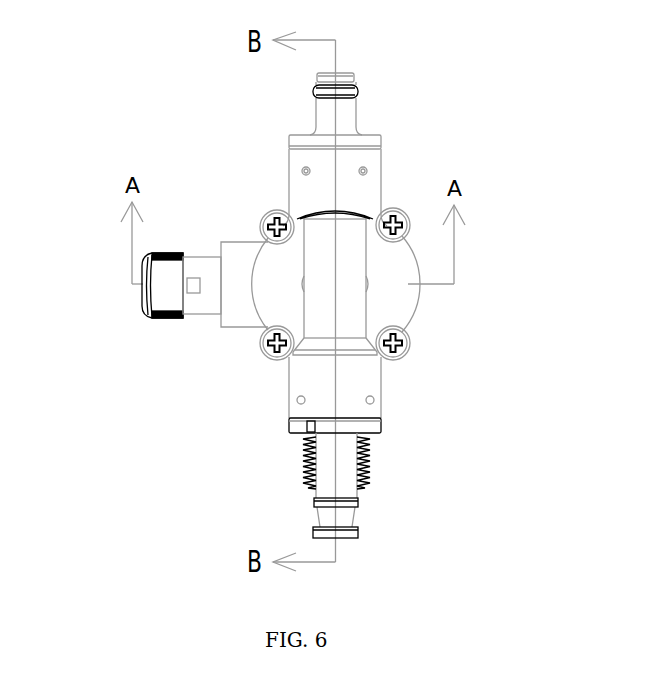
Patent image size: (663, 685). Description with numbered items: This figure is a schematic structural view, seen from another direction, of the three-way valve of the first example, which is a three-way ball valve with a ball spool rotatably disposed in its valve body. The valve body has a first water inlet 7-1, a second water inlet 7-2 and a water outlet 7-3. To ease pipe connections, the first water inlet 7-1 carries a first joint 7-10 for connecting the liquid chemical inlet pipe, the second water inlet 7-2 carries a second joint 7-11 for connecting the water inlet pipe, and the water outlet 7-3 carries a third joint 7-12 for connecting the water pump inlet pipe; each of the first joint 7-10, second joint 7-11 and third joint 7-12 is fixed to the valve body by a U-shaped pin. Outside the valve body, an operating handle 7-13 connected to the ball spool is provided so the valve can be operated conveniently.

The first water inlet 7-1 is at (276, 432).
The second water inlet 7-2 is at (390, 394).
The water outlet 7-3 is at (386, 174).
The first joint 7-10 is at (379, 466).
The second joint 7-11 is at (316, 476).
The third joint 7-12 is at (358, 98).
The operating handle 7-13 is at (198, 325).